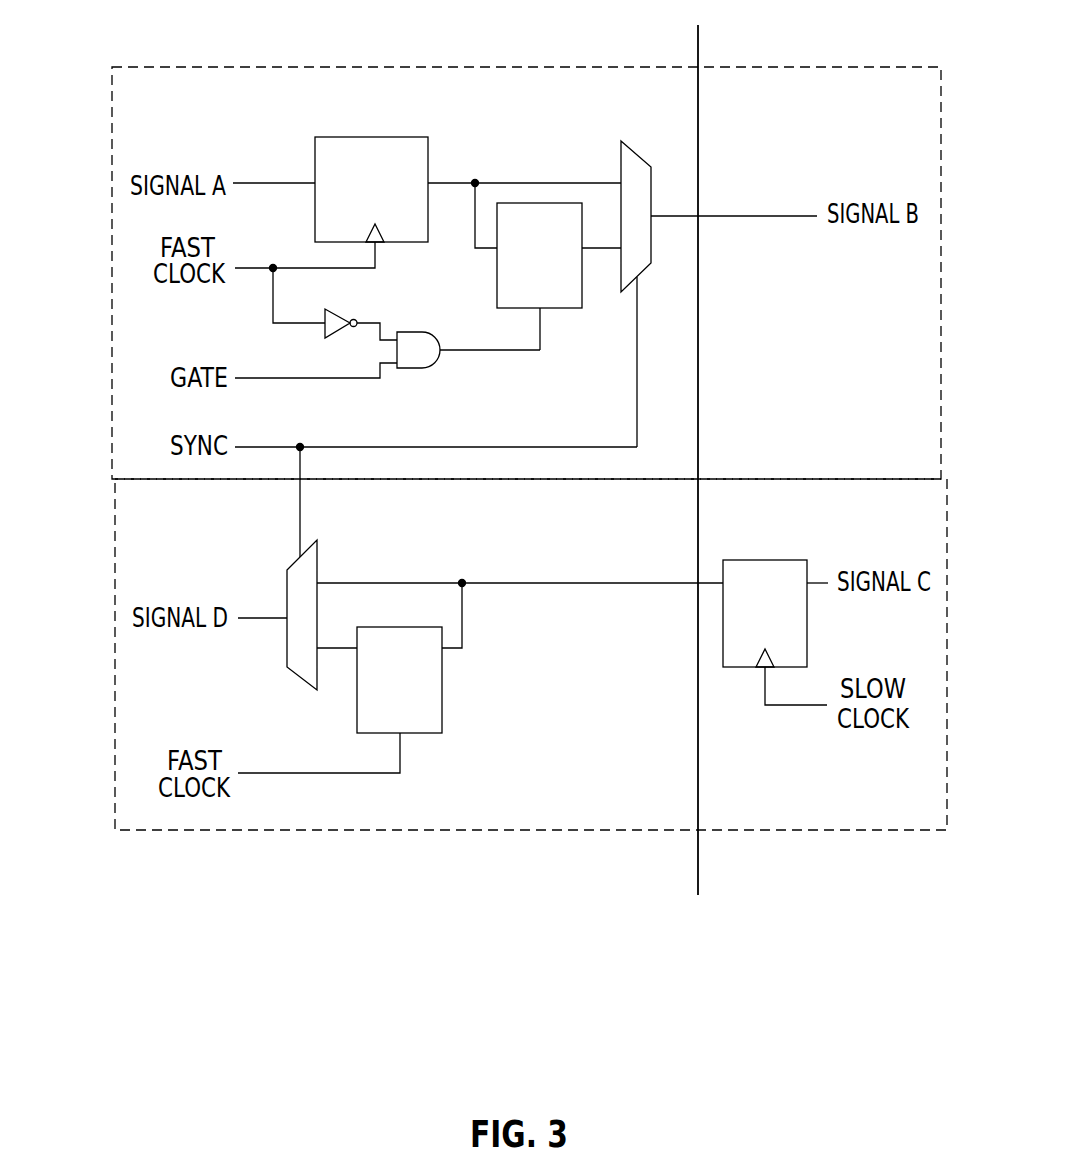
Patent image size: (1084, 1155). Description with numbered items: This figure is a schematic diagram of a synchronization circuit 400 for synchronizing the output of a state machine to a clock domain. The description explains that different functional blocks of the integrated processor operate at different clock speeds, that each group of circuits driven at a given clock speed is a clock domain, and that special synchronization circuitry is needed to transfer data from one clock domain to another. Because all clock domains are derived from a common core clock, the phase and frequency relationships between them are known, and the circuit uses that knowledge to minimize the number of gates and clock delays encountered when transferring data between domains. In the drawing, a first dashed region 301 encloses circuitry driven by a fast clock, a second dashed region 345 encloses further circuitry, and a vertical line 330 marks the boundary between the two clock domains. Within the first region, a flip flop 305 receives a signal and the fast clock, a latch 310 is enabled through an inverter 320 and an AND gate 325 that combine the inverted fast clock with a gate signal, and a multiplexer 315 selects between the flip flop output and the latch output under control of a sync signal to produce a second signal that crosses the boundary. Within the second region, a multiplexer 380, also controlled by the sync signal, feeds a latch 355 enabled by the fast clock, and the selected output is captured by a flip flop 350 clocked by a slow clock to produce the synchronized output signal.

The first clock domain circuit portion 301 is at (282, 63).
The flip flop 305 is at (357, 134).
The latch 310 is at (562, 309).
The multiplexer 315 is at (630, 150).
The inverter 320 is at (337, 310).
The AND gate 325 is at (408, 369).
The clock domain boundary 330 is at (699, 47).
The second clock domain circuit portion 345 is at (378, 831).
The flip flop 350 is at (785, 558).
The latch 355 is at (428, 735).
The multiplexer 380 is at (310, 687).
The synchronization circuit 400 is at (243, 908).